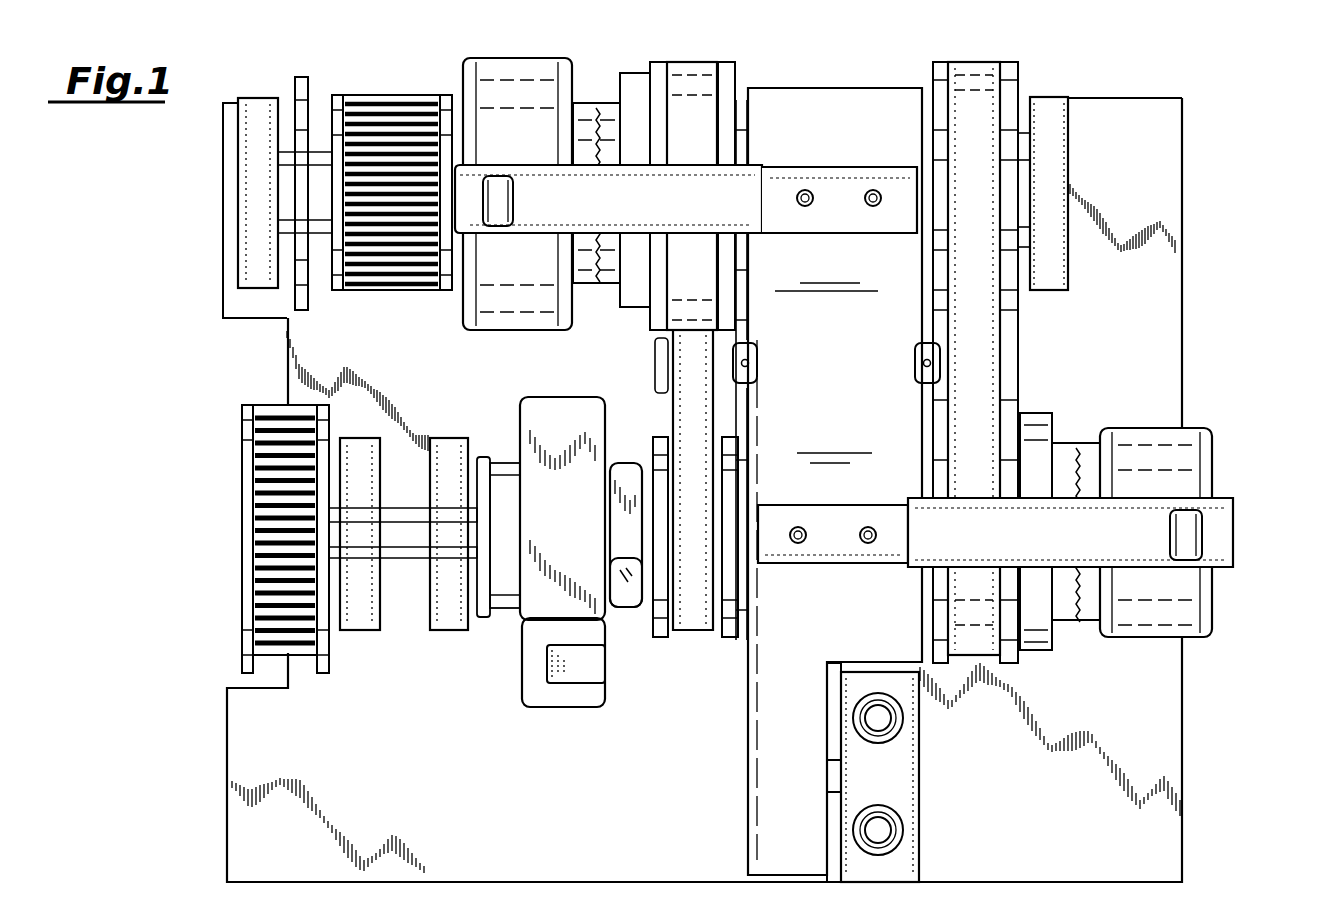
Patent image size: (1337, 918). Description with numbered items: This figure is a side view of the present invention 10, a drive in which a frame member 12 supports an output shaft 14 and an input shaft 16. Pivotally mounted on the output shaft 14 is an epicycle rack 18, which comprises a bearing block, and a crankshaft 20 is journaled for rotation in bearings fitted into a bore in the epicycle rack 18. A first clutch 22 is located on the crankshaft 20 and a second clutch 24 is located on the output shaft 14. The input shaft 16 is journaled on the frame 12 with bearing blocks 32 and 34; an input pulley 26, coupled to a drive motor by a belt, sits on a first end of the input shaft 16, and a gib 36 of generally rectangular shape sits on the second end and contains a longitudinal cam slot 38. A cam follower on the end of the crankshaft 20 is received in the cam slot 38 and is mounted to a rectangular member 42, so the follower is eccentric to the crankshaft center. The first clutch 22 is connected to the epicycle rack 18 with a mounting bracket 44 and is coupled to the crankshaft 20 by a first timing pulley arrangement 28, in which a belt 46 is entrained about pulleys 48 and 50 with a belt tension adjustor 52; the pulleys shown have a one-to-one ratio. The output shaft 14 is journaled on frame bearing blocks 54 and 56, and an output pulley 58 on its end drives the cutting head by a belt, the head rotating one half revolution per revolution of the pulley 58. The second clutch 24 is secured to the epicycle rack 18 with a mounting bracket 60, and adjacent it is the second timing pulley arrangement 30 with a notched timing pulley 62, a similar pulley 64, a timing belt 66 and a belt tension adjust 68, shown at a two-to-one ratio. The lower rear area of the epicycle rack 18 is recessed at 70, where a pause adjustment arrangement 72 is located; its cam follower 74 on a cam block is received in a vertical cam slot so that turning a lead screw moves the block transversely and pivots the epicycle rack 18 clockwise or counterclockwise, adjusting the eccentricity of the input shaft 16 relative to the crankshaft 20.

The present invention 10 is at (275, 70).
The frame member 12 is at (1165, 333).
The output shaft 14 is at (290, 305).
The input shaft 16 is at (404, 558).
The epicycle rack 18 is at (800, 90).
The crankshaft 20 is at (650, 565).
The first clutch 22 is at (1200, 440).
The second clutch 24 is at (495, 62).
The input pulley 26 is at (250, 595).
The first timing pulley arrangement 28 is at (1048, 72).
The second timing pulley arrangement 30 is at (635, 62).
The bearing block 32 is at (360, 630).
The bearing block 34 is at (450, 630).
The gib 36 is at (540, 396).
The cam slot 38 is at (578, 684).
The rectangular member 42 is at (622, 464).
The mounting bracket 44 is at (1233, 560).
The belt 46 is at (990, 362).
The pulley 48 is at (940, 62).
The pulley 50 is at (1038, 413).
The belt tension adjustor 52 is at (918, 370).
The frame bearing block 54 is at (1066, 150).
The frame bearing block 56 is at (243, 222).
The output pulley 58 is at (388, 104).
The mounting bracket 60 is at (755, 165).
The notched timing pulley 62 is at (732, 64).
The pulley 64 is at (732, 588).
The timing belt 66 is at (693, 632).
The belt tension adjust 68 is at (752, 372).
The recessed area 70 is at (832, 850).
The pause adjustment arrangement 72 is at (905, 780).
The cam follower 74 is at (832, 776).